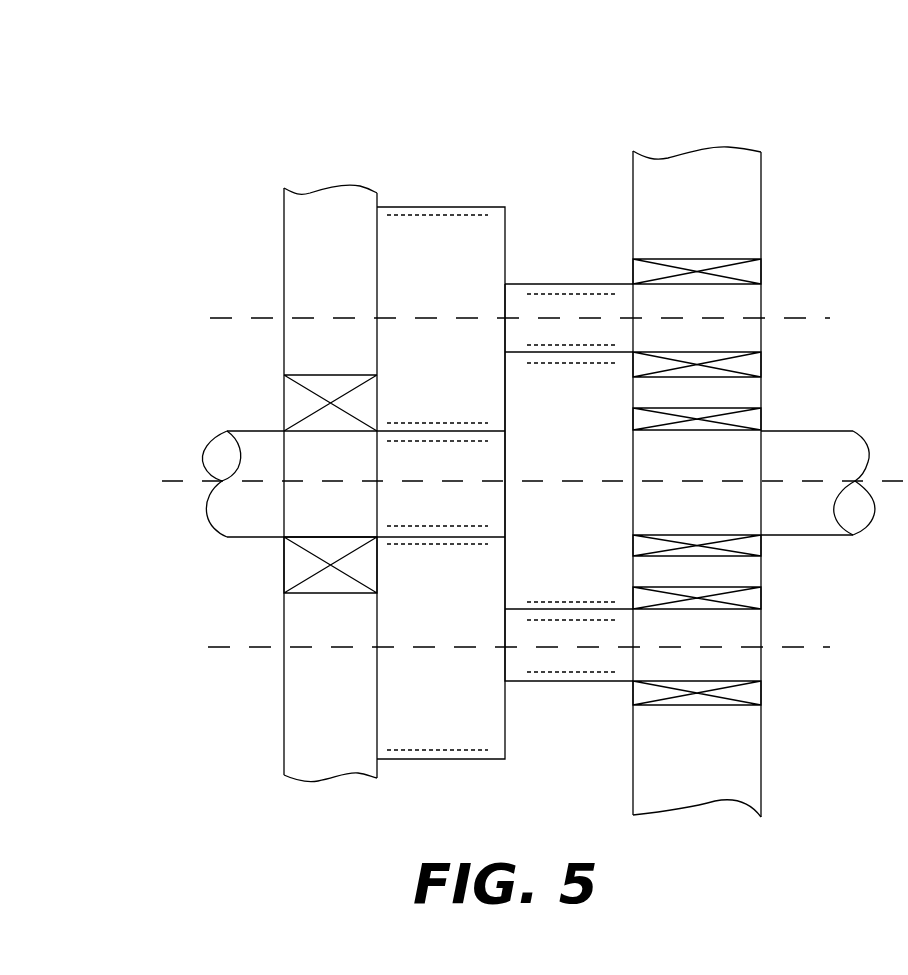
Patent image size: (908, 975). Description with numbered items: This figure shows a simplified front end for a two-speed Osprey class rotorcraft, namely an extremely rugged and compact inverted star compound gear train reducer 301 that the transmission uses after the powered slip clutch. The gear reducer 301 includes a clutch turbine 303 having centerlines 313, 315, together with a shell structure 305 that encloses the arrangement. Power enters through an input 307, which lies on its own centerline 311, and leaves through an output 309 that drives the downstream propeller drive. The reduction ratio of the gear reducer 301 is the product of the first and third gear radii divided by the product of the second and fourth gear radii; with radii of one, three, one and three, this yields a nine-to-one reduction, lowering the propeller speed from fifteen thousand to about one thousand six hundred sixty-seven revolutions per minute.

The inverted star compound gear train reducer 301 is at (150, 95).
The clutch turbine 303 is at (213, 269).
The shell structure 305 is at (762, 197).
The input 307 is at (243, 540).
The output 309 is at (818, 538).
The centerline 311 is at (214, 322).
The centerline 313 is at (167, 477).
The centerline 315 is at (213, 651).